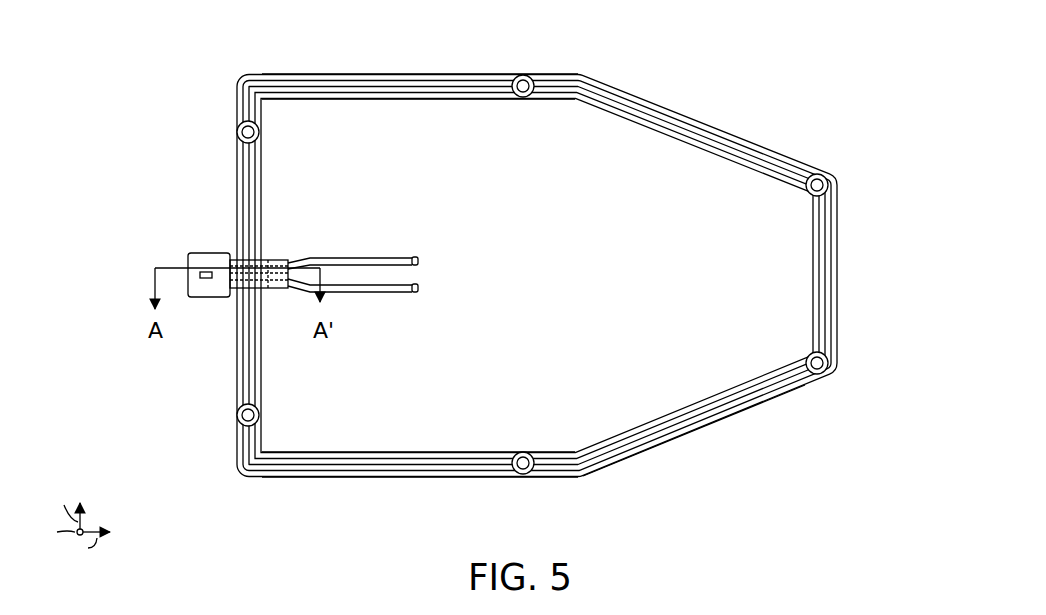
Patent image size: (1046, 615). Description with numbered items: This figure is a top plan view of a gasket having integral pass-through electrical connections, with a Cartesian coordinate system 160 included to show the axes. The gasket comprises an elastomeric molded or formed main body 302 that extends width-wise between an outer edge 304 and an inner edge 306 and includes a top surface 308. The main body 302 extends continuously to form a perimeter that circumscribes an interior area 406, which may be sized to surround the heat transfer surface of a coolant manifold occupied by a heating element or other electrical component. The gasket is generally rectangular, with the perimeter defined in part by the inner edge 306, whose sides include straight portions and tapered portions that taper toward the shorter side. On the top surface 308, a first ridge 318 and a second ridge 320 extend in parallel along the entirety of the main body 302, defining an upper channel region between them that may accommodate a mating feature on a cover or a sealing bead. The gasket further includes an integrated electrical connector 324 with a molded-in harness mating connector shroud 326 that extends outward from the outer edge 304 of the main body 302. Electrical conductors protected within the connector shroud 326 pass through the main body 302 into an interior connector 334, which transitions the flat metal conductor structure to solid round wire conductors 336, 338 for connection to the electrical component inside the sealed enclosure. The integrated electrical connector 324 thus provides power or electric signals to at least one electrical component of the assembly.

The Cartesian coordinate system 160 is at (122, 502).
The main body 302 is at (262, 90).
The outer edge 304 is at (400, 477).
The inner edge 306 is at (382, 452).
The top surface 308 is at (680, 419).
The first ridge 318 is at (412, 82).
The second ridge 320 is at (375, 92).
The integrated electrical connector 324 is at (314, 267).
The molded-in harness mating connector shroud 326 is at (200, 260).
The interior connector 334 is at (273, 263).
The wire conductor 336 is at (418, 261).
The wire conductor 338 is at (418, 289).
The interior area 406 is at (651, 308).